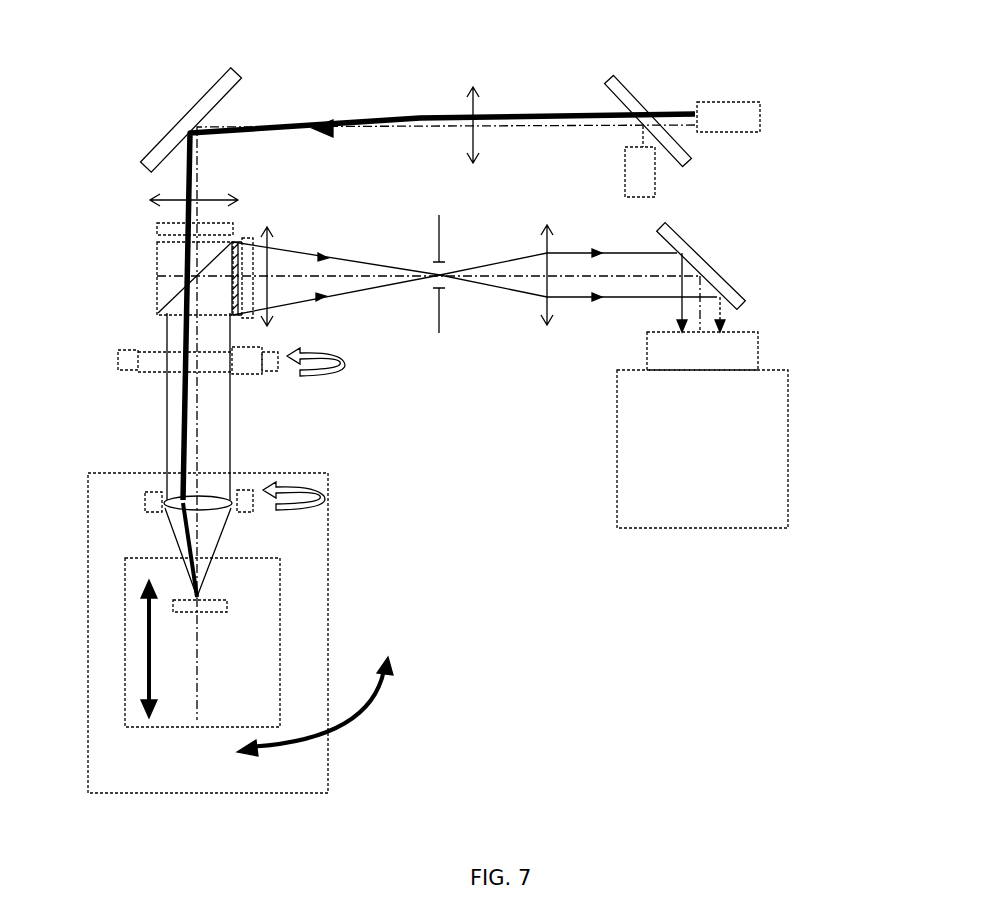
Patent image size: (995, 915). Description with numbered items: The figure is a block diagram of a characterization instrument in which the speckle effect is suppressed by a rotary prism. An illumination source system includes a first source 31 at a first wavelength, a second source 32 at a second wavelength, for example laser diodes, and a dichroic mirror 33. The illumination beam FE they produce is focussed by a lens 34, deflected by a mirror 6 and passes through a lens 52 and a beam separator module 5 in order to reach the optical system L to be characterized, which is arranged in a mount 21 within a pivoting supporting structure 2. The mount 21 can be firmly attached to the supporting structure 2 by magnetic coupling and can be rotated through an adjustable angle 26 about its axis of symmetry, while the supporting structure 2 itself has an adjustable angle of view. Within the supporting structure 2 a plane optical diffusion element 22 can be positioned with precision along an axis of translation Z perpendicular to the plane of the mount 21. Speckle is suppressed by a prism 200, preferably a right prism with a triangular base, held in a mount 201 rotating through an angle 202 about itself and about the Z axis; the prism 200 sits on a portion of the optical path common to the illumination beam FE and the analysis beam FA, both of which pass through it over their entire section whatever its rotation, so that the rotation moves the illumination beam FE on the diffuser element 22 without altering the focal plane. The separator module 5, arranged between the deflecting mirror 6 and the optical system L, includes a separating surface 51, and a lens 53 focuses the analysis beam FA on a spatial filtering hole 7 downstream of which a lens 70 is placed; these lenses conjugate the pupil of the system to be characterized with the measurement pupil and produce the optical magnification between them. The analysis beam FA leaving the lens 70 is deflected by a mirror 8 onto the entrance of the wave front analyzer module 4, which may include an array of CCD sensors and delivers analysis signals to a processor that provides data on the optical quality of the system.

The pivoting supporting structure 2 is at (340, 610).
The wave front analyzer module 4 is at (795, 486).
The beam separator module 5 is at (150, 275).
The mirror 6 is at (190, 108).
The spatial filtering hole 7 is at (437, 318).
The mirror 8 is at (713, 265).
The mount 21 is at (162, 505).
The plane optical diffusion element 22 is at (218, 603).
The adjustable angle 26 is at (315, 511).
The first source 31 is at (657, 185).
The second source 32 is at (732, 102).
The dichroic mirror 33 is at (627, 87).
The lens 34 is at (463, 110).
The separating surface 51 is at (172, 296).
The lens 52 is at (215, 193).
The lens 53 is at (265, 237).
The lens 70 is at (548, 307).
The prism 200 is at (247, 367).
The mount 201 is at (130, 362).
The angle 202 is at (333, 370).
The illumination beam FE is at (370, 117).
The analysis beam FA is at (355, 292).
The optical system to be characterized L is at (180, 508).
The Z axis Z is at (148, 670).